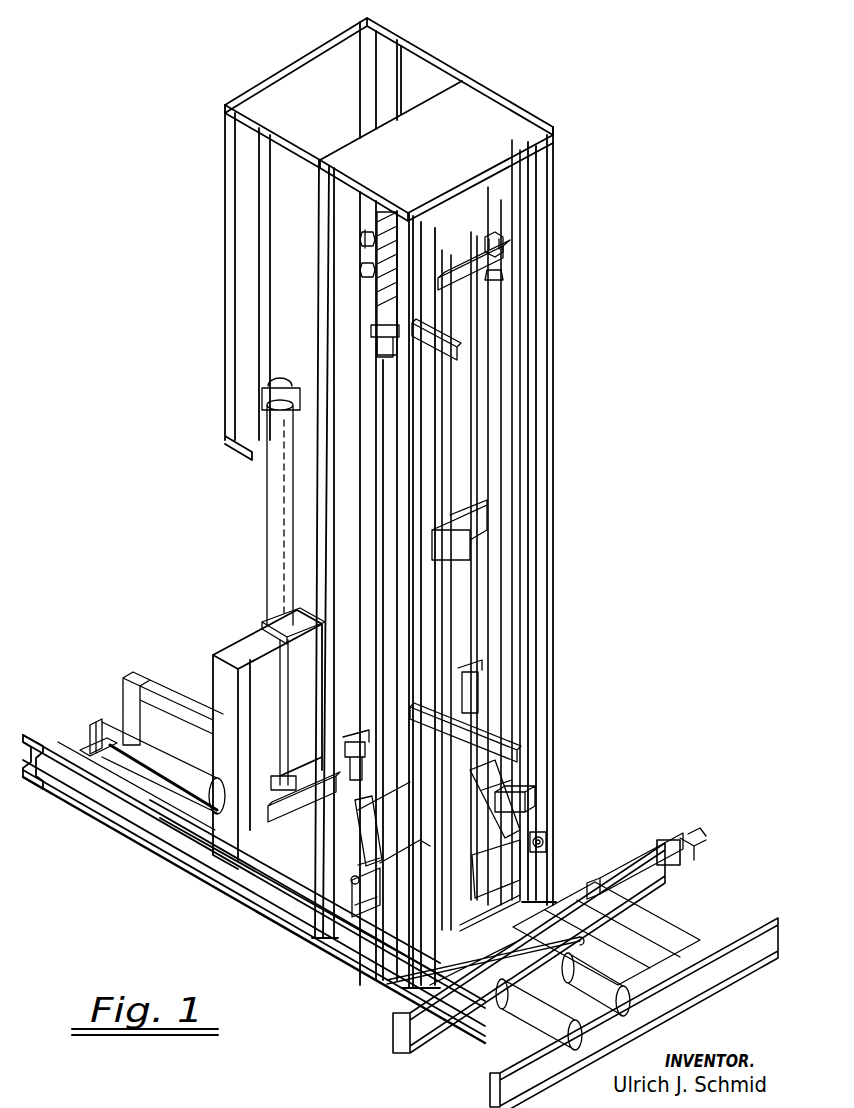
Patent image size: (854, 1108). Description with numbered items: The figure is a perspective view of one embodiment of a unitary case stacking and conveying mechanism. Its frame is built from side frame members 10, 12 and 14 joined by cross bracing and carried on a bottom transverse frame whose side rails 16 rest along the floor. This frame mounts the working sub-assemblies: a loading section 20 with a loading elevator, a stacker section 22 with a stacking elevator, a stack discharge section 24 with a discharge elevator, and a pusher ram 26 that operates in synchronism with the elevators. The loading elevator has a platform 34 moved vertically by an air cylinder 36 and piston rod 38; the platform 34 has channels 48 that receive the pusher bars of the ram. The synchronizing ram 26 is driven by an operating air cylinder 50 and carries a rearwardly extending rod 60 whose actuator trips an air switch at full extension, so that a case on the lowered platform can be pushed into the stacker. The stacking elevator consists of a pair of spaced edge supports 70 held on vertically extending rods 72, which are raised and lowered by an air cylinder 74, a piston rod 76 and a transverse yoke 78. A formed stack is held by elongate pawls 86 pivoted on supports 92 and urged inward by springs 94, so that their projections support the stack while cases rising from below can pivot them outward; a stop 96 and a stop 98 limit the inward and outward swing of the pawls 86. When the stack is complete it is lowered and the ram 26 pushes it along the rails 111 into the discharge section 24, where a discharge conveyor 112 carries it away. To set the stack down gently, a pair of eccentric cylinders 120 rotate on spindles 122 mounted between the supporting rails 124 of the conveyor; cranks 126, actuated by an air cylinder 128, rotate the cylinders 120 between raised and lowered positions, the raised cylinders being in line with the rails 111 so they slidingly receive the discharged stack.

The side frame member 10 is at (230, 676).
The side frame member 12 is at (327, 318).
The side frame member 14 is at (415, 222).
The side rail 16 is at (141, 676).
The loading section 20 is at (238, 548).
The stacker section 22 is at (572, 156).
The stack discharge section 24 is at (702, 916).
The pusher ram 26 is at (106, 695).
The platform 34 is at (306, 904).
The air cylinder 36 is at (268, 585).
The piston rod 38 is at (280, 688).
The channels 48 is at (278, 820).
The operating air cylinder 50 is at (172, 775).
The rearwardly extending rod 60 is at (183, 727).
The edge supports 70 is at (496, 888).
The vertically extending rods 72 is at (500, 400).
The air cylinder 74 is at (372, 393).
The piston rod 76 is at (370, 268).
The transverse yoke 78 is at (467, 262).
The pawls 86 is at (515, 810).
The supports 92 is at (547, 842).
The springs 94 is at (355, 810).
The stop 96 is at (322, 896).
The stop 98 is at (528, 820).
The rails 111 is at (478, 908).
The discharge conveyor 112 is at (704, 840).
The eccentric cylinders 120 is at (520, 1008).
The spindles 122 is at (583, 1040).
The supporting rails 124 is at (647, 870).
The cranks 126 is at (498, 948).
The air cylinder 128 is at (606, 870).